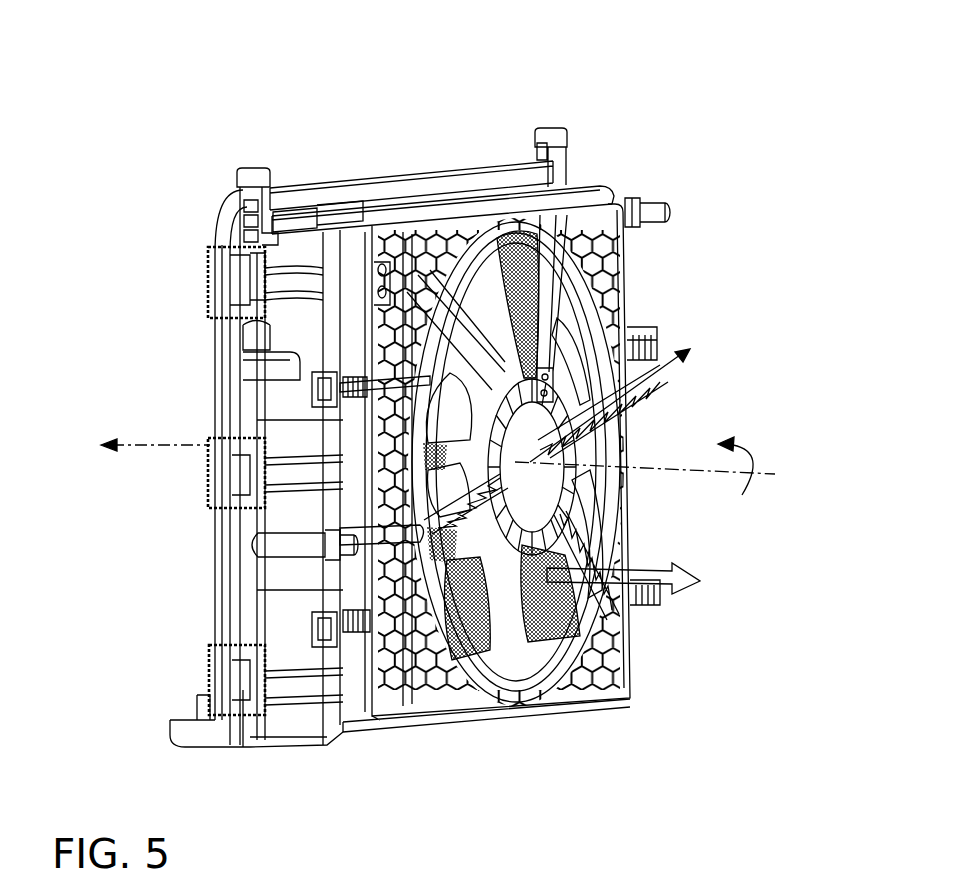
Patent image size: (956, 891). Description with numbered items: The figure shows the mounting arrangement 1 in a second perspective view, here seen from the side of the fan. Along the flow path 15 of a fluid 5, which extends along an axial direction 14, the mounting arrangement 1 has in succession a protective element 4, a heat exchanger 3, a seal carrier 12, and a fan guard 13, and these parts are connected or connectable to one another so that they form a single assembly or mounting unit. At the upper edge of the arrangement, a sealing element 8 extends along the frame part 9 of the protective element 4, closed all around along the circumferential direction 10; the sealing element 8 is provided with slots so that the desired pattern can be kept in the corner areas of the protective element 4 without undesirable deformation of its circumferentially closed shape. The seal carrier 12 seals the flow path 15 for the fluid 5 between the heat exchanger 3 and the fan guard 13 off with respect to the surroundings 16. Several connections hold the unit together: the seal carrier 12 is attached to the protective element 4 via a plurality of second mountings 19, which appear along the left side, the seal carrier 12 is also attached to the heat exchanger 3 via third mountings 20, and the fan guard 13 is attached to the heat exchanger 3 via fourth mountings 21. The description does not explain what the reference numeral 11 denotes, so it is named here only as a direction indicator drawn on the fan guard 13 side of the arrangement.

The mounting arrangement 1 is at (596, 165).
The heat exchanger 3 is at (255, 545).
The protective element 4 is at (493, 168).
The fluid 5 is at (653, 572).
The sealing element 8 is at (355, 180).
The frame part 9 is at (429, 187).
The circumferential direction 10 is at (752, 453).
The radial direction 11 is at (662, 372).
The seal carrier 12 is at (298, 732).
The fan guard 13 is at (515, 340).
The axial direction 14 is at (146, 445).
The flow path 15 is at (688, 585).
The surroundings 16 is at (576, 64).
The second mountings 19 is at (210, 281).
The third mountings 20 is at (290, 358).
The fourth mountings 21 is at (325, 400).